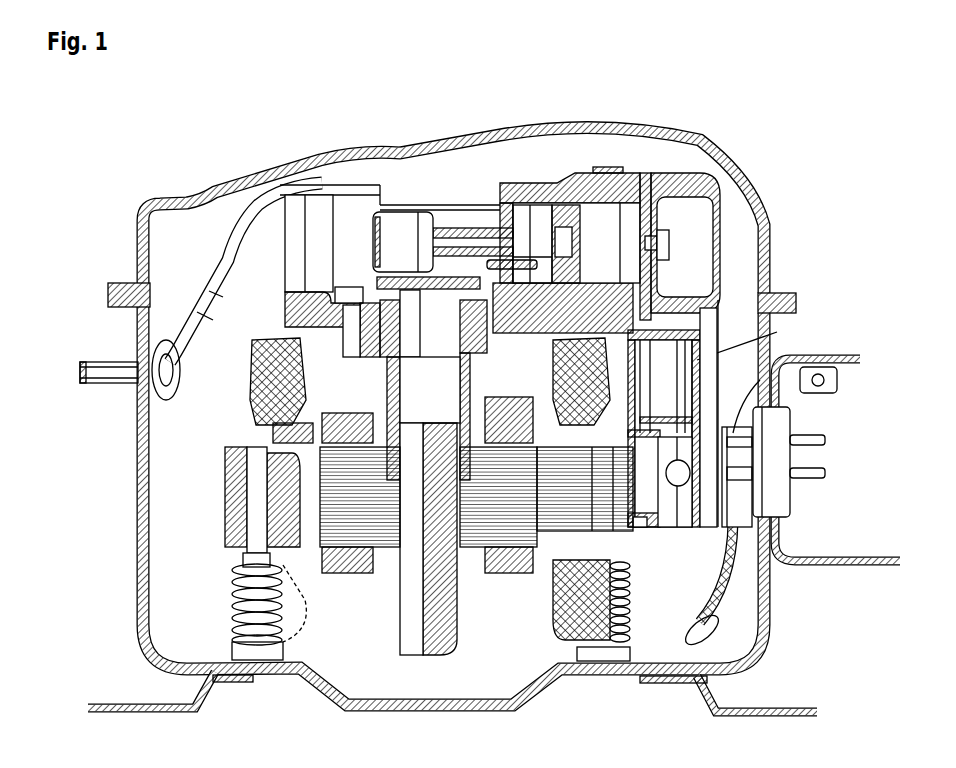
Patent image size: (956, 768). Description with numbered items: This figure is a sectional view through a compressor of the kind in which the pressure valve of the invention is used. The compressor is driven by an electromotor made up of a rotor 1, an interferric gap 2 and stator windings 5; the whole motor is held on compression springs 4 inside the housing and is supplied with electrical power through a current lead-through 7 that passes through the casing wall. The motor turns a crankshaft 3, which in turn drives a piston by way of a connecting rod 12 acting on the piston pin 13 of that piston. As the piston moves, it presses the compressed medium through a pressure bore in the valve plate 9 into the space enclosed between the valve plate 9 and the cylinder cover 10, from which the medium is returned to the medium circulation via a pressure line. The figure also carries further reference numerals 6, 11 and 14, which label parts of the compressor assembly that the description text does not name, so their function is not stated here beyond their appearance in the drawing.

The rotor 1 is at (590, 565).
The interferric gap 2 is at (548, 503).
The crankshaft 3 is at (430, 497).
The compression springs 4 is at (240, 612).
The stator windings 5 is at (567, 373).
The suction pipe 6 is at (255, 380).
The current lead-through 7 is at (777, 497).
The valve plate 9 is at (660, 283).
The cylinder cover 10 is at (715, 233).
The cylinder 11 is at (570, 220).
The connecting rod 12 is at (395, 200).
The piston pin 13 is at (535, 237).
The valve plate 14 is at (657, 243).